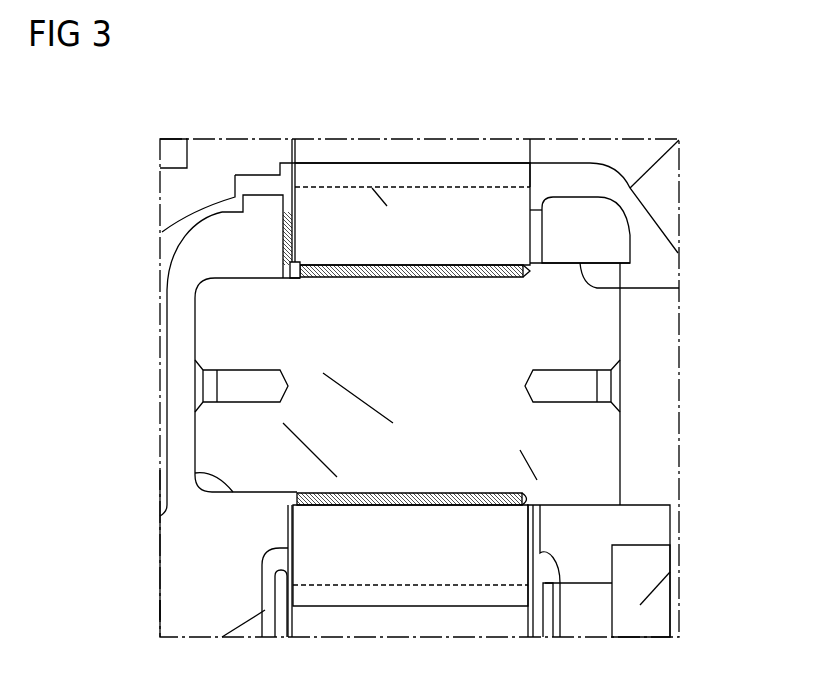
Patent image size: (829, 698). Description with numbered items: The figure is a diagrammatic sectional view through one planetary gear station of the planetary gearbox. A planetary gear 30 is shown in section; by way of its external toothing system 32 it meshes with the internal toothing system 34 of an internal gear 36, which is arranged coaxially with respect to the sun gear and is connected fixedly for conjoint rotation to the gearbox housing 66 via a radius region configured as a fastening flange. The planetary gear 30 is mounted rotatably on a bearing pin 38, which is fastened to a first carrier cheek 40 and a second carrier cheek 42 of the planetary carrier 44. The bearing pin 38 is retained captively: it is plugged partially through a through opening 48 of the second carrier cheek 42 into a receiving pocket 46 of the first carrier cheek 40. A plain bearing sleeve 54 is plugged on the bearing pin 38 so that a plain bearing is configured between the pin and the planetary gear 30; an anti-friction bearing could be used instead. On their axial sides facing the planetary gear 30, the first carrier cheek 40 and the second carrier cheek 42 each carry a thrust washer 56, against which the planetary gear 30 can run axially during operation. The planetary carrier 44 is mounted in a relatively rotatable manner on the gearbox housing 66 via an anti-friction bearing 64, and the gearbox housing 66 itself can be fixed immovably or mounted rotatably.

The planetary gear 30 is at (313, 207).
The external toothing system 32 is at (435, 182).
The internal toothing system 34 is at (412, 130).
The internal gear 36 is at (357, 153).
The bearing pin 38 is at (600, 443).
The first carrier cheek 40 is at (183, 552).
The second carrier cheek 42 is at (650, 512).
The planetary carrier 44 is at (188, 592).
The receiving pocket 46 is at (193, 476).
The through opening 48 is at (680, 288).
The plain bearing sleeve 54 is at (376, 504).
The thrust washer 56 is at (262, 637).
The anti-friction bearing 64 is at (612, 580).
The gearbox housing 66 is at (212, 139).